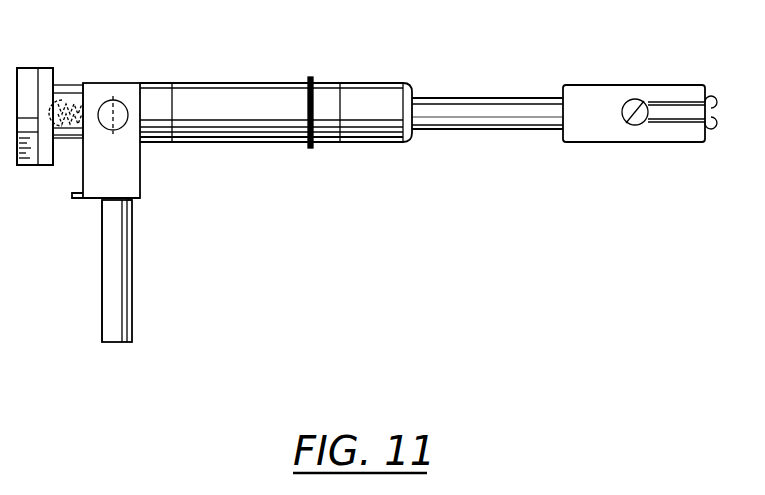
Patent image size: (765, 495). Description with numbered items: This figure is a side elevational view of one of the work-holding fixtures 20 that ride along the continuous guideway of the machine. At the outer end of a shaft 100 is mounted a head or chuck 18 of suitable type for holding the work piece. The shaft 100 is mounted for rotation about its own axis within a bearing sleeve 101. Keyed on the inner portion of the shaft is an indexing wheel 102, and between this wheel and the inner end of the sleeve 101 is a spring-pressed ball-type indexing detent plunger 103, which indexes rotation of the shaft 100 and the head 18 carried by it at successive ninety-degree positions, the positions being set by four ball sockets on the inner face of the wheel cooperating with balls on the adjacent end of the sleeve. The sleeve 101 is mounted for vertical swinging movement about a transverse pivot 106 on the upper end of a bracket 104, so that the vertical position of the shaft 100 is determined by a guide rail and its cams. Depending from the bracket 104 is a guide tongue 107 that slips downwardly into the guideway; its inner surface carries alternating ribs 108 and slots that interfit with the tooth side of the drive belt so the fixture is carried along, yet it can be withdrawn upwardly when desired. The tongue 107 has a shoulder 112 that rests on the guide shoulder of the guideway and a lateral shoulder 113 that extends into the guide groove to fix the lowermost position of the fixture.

The head or chuck 18 is at (616, 86).
The fixture 20 is at (262, 83).
The shaft 100 is at (492, 129).
The bearing sleeve 101 is at (240, 143).
The indexing wheel 102 is at (52, 66).
The spring-pressed ball-type indexing detent plunger 103 is at (61, 100).
The bracket 104 is at (133, 187).
The transverse pivot 106 is at (125, 102).
The guide tongue 107 is at (133, 315).
The ribs 108 is at (112, 308).
The shoulder 112 is at (133, 203).
The lateral shoulder 113 is at (73, 200).